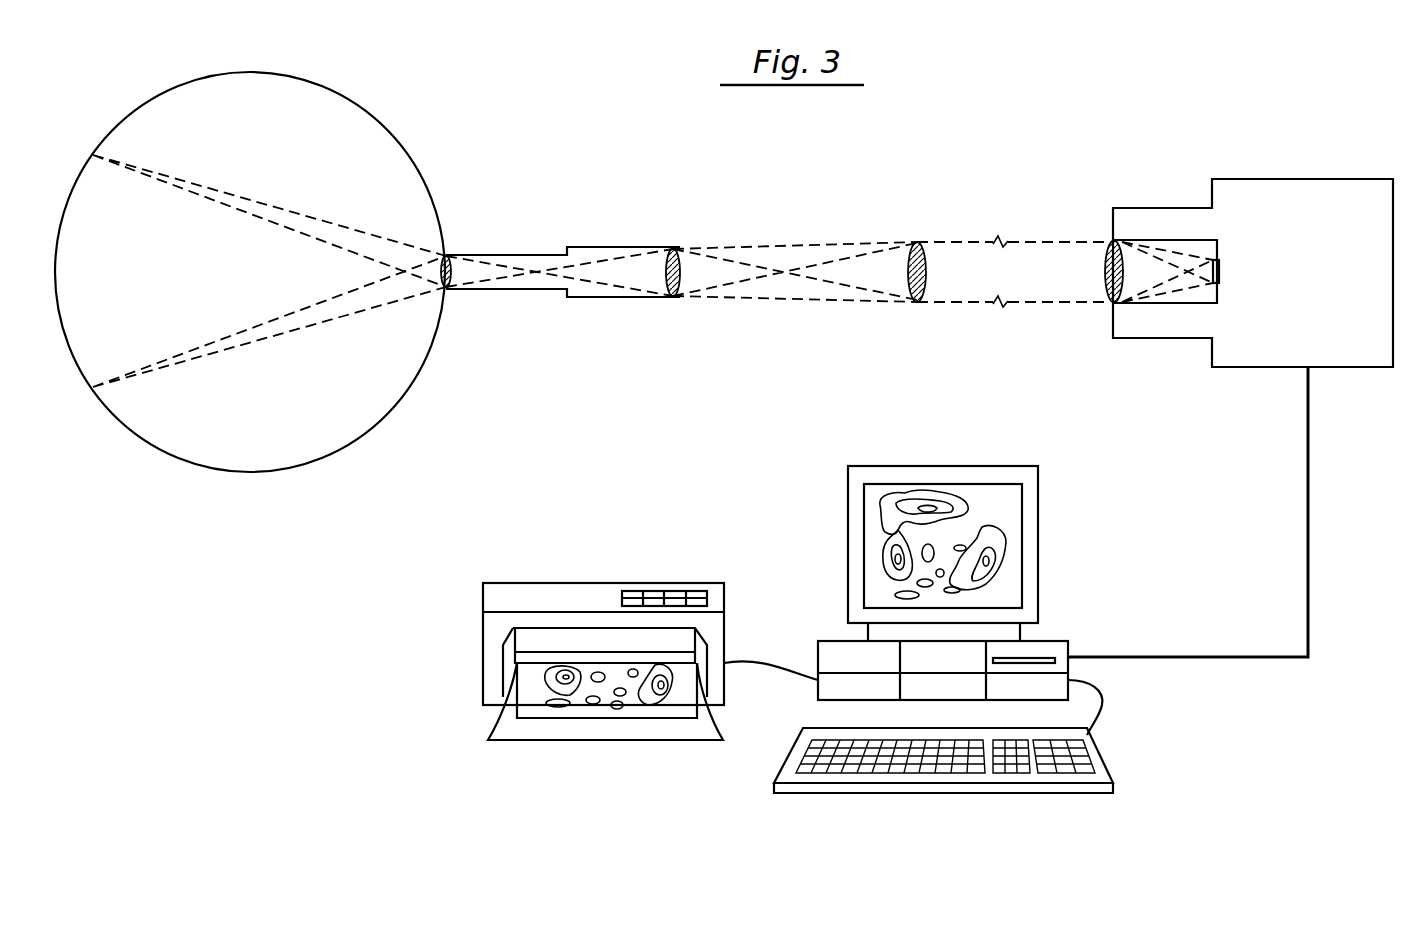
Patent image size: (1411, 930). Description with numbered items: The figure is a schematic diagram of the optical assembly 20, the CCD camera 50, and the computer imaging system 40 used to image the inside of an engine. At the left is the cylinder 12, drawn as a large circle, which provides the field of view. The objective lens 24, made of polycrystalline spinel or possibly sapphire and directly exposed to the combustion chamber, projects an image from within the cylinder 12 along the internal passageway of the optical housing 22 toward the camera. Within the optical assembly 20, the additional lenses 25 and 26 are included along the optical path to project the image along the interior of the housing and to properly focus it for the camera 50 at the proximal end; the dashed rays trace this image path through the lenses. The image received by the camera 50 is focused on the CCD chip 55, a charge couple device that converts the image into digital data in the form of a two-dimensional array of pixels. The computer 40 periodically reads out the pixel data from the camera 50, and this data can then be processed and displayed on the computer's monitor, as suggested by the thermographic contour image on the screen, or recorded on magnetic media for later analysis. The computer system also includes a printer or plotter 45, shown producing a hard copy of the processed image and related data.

The cylinder 12 is at (170, 90).
The optical assembly 20 is at (569, 248).
The tube housing 22 is at (602, 247).
The objective lens 24 is at (455, 272).
The additional lens 25 is at (683, 277).
The additional lens 26 is at (926, 292).
The CCD camera 50 is at (1249, 225).
The CCD chip 55 is at (1220, 271).
The computer imaging system 40 is at (1062, 624).
The printer or plotter 45 is at (605, 587).